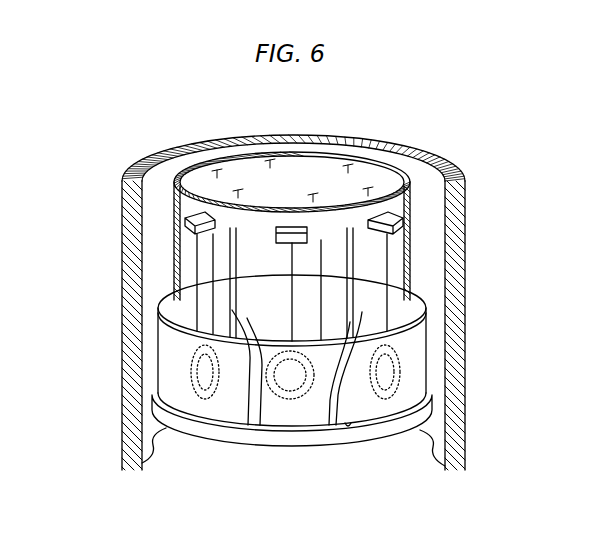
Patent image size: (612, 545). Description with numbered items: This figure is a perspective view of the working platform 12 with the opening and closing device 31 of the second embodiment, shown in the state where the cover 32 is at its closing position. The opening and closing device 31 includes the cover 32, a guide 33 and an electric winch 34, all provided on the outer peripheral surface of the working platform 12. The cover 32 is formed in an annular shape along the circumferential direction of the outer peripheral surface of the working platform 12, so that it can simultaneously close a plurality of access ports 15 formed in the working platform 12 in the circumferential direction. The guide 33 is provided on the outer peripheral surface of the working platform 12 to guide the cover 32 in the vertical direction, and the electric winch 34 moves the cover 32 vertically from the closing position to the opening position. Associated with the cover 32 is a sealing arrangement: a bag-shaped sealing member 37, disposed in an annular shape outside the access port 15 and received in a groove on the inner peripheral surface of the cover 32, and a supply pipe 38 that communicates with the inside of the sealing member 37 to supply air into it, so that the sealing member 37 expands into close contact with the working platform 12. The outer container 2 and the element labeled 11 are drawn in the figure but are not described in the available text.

The container body 2 is at (450, 165).
The cap member 11 is at (326, 202).
The working platform 12 is at (398, 160).
The access port 15 is at (157, 430).
The opening and closing device 31 is at (436, 328).
The cover 32 is at (342, 420).
The guide 33 is at (240, 425).
The electric winch 34 is at (198, 182).
The sealing member 37 is at (400, 380).
The supply pipe 38 is at (287, 158).